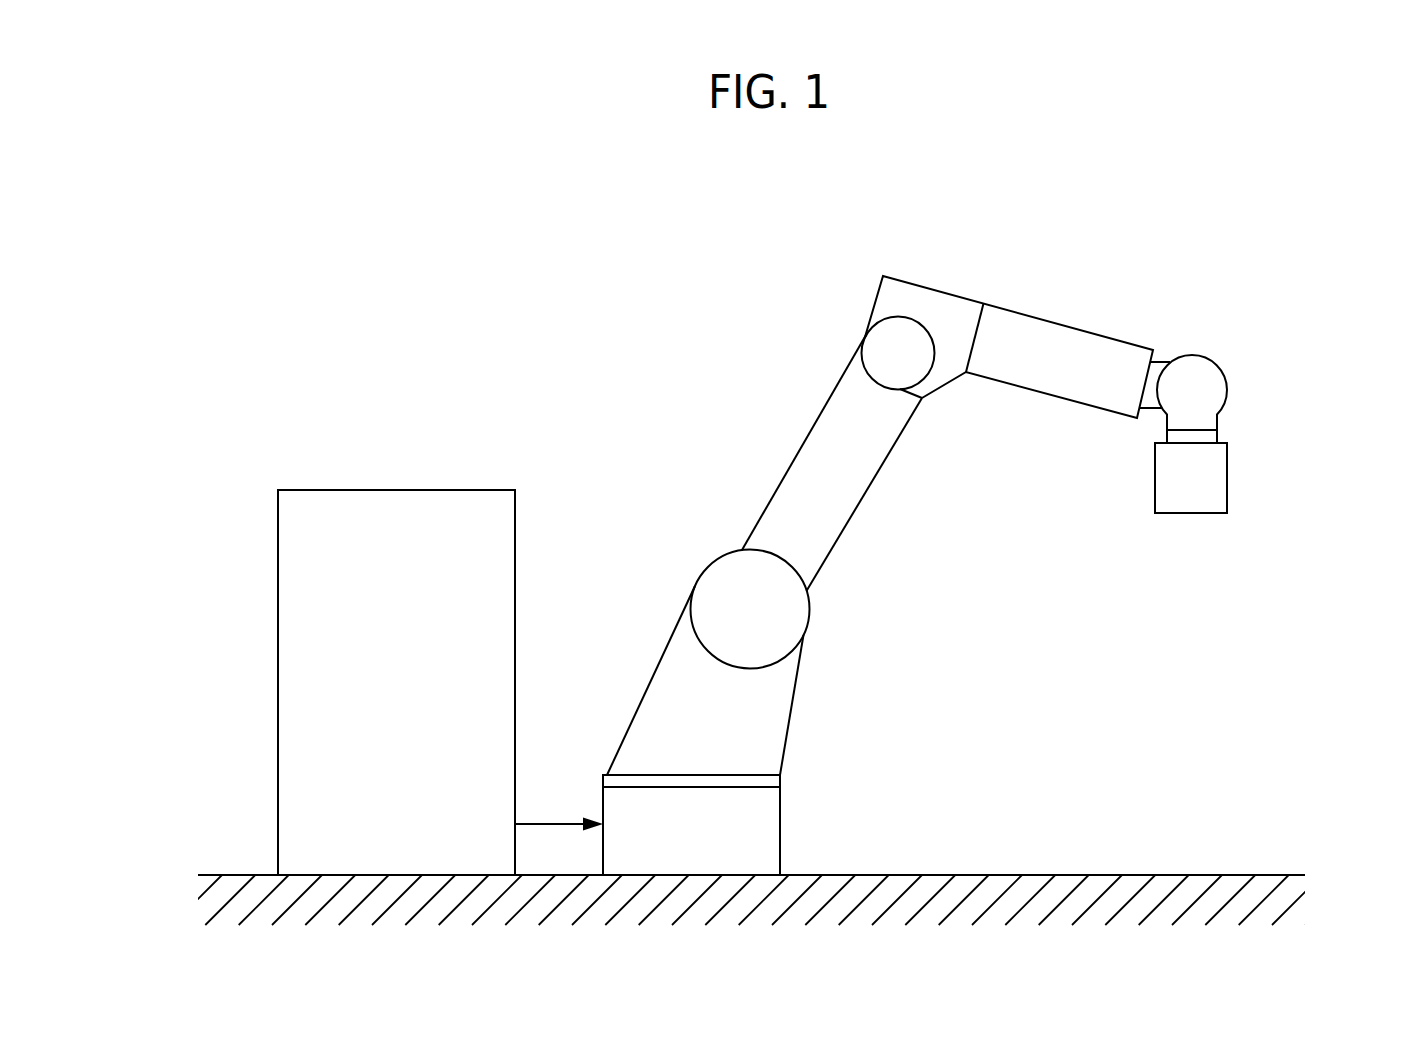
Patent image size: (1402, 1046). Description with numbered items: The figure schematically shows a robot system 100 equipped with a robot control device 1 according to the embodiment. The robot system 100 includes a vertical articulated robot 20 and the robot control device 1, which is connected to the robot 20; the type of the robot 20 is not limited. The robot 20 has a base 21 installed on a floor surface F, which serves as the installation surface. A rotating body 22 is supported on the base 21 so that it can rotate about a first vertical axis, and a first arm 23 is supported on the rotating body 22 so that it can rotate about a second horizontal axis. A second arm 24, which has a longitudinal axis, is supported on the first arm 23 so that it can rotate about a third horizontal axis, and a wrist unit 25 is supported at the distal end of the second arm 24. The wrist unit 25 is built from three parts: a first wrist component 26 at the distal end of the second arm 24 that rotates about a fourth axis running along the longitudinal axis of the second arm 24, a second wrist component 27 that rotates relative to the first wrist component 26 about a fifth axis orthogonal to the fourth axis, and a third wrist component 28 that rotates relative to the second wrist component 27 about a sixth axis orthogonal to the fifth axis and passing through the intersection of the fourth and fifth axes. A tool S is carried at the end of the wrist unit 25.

The robot system 100 is at (586, 288).
The robot control device 1 is at (337, 471).
The robot 20 is at (969, 534).
The base 21 is at (780, 825).
The rotating body 22 is at (795, 702).
The first arm 23 is at (868, 485).
The second arm 24 is at (945, 292).
The wrist unit 25 is at (1237, 357).
The first wrist component 26 is at (1163, 363).
The second wrist component 27 is at (1203, 362).
The third wrist component 28 is at (1217, 432).
The tool S is at (1227, 475).
The floor surface F is at (1135, 875).